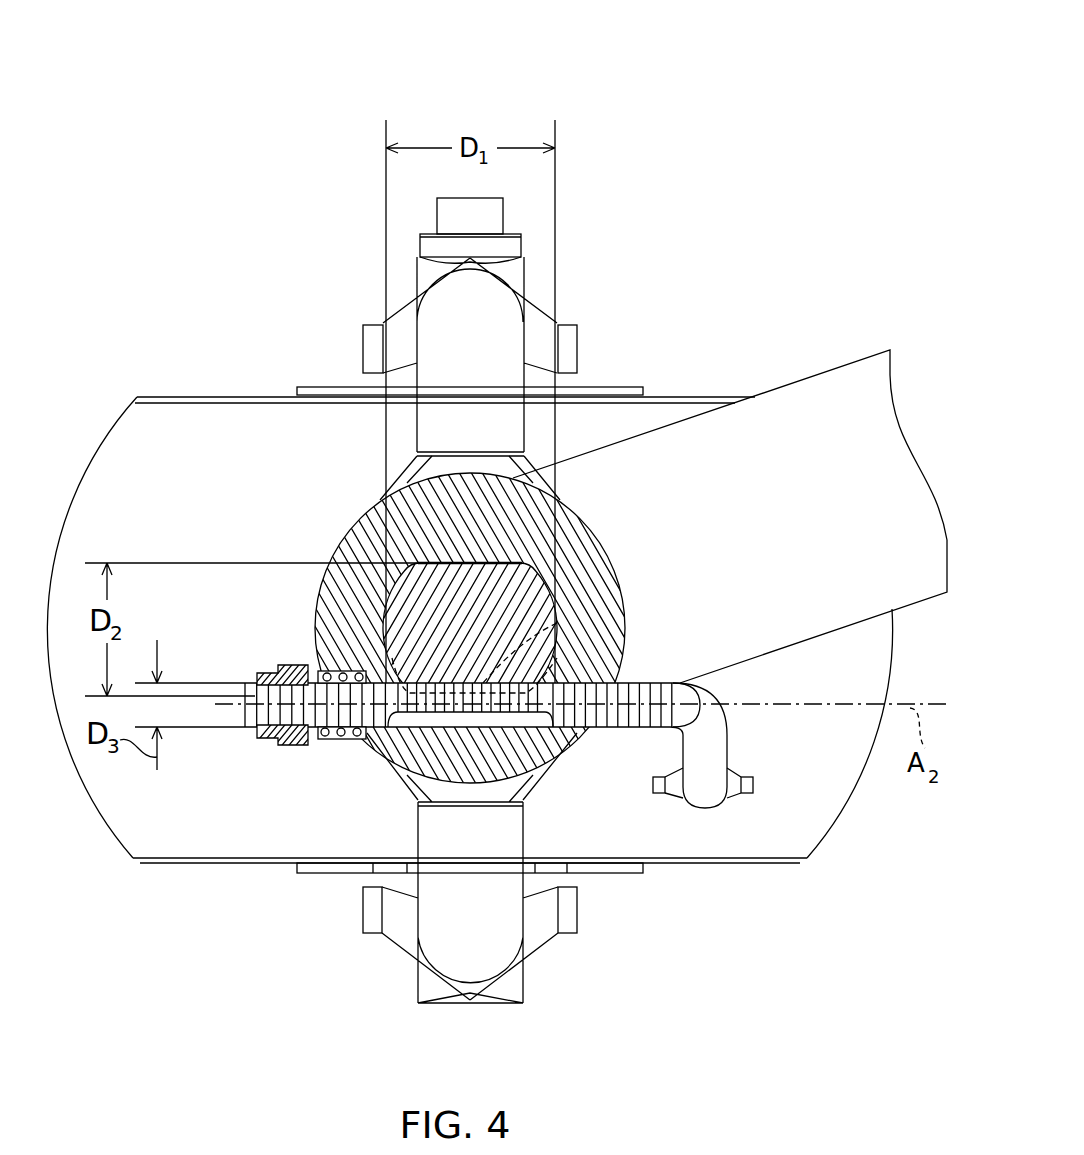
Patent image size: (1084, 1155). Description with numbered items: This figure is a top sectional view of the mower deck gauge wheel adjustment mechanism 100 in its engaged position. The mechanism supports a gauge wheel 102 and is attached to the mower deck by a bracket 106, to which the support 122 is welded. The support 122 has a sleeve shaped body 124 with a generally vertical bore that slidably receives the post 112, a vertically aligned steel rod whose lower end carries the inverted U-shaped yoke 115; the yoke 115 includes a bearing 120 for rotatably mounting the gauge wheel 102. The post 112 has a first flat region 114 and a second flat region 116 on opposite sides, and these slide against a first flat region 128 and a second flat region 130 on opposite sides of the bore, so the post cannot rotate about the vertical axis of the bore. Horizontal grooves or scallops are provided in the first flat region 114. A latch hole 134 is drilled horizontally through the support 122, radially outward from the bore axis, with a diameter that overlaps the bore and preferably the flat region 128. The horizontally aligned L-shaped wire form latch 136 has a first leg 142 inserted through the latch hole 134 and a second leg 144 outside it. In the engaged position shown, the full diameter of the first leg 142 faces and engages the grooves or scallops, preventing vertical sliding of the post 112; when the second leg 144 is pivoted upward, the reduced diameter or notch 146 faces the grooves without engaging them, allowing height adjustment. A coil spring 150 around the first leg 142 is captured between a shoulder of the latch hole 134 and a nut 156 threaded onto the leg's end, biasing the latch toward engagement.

The mower deck gauge wheel adjustment mechanism 100 is at (710, 41).
The gauge wheel 102 is at (198, 442).
The bracket 106 is at (795, 413).
The post 112 is at (557, 617).
The first flat region 114 is at (442, 713).
The yoke 115 is at (460, 313).
The second flat region 116 is at (485, 520).
The bearing 120 is at (390, 867).
The support 122 is at (357, 488).
The sleeve shaped body 124 is at (625, 643).
The first flat region of bore 128 is at (560, 645).
The second flat region of bore 130 is at (432, 585).
The latch hole 134 is at (583, 700).
The horizontally aligned L-shaped wire form latch 136 is at (636, 791).
The first leg 142 is at (603, 713).
The second leg 144 is at (710, 735).
The notch 146 is at (483, 712).
The coil spring 150 is at (338, 670).
The nut 156 is at (278, 666).